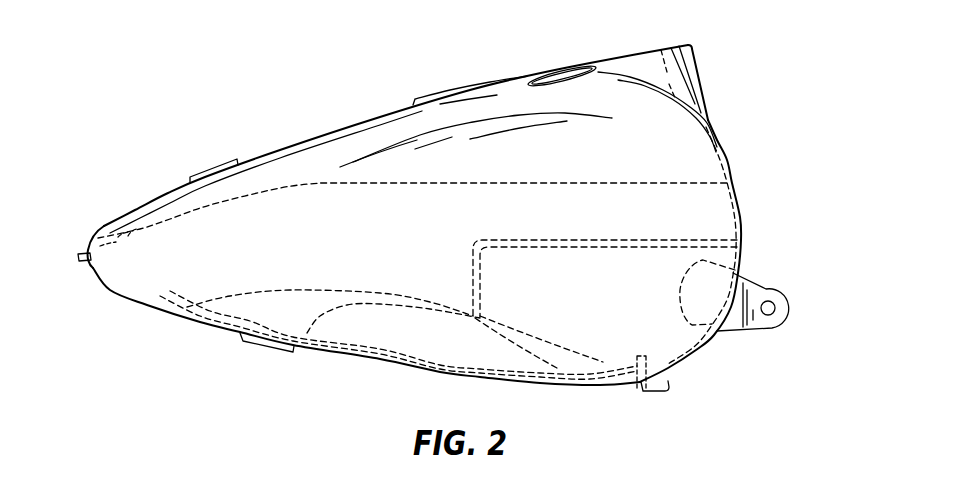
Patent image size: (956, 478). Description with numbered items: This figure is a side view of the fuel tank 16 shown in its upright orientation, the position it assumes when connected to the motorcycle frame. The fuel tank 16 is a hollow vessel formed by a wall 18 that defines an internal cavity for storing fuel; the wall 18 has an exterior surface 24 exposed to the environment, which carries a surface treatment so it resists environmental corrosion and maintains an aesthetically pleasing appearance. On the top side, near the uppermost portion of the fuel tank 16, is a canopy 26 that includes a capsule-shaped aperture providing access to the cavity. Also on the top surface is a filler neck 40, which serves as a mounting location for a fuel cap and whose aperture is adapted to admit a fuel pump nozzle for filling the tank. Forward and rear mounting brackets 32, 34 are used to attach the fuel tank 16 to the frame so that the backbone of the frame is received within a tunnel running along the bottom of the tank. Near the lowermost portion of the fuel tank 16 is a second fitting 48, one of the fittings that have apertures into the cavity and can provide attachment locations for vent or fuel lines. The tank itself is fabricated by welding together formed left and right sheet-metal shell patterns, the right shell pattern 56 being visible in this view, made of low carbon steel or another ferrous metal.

The fuel tank 16 is at (258, 81).
The wall 18 is at (697, 163).
The exterior surface 24 is at (525, 166).
The canopy 26 is at (688, 72).
The forward mounting bracket 32 is at (763, 287).
The rear mounting bracket 34 is at (84, 263).
The filler neck 40 is at (582, 78).
The second fitting 48 is at (661, 391).
The right shell pattern 56 is at (173, 271).